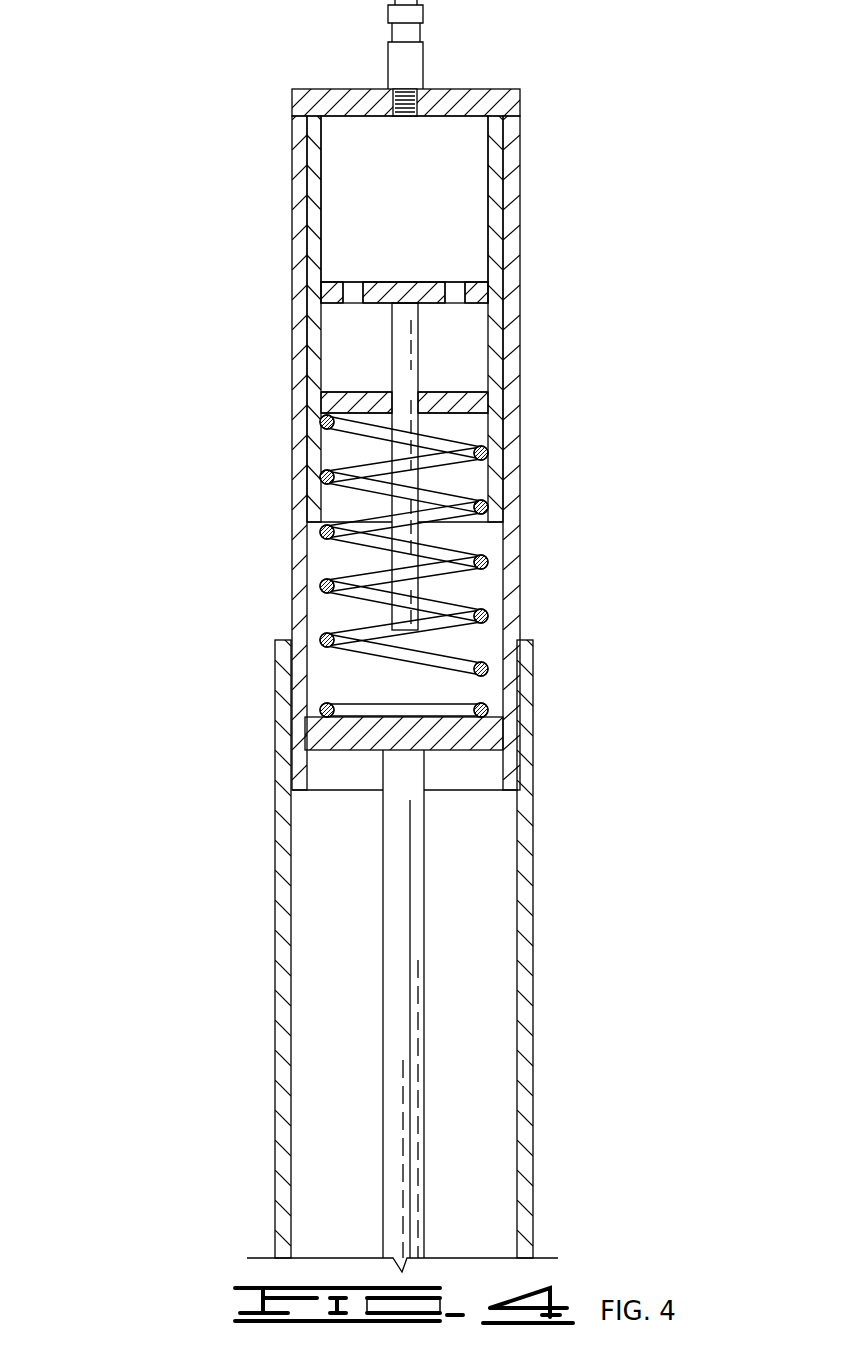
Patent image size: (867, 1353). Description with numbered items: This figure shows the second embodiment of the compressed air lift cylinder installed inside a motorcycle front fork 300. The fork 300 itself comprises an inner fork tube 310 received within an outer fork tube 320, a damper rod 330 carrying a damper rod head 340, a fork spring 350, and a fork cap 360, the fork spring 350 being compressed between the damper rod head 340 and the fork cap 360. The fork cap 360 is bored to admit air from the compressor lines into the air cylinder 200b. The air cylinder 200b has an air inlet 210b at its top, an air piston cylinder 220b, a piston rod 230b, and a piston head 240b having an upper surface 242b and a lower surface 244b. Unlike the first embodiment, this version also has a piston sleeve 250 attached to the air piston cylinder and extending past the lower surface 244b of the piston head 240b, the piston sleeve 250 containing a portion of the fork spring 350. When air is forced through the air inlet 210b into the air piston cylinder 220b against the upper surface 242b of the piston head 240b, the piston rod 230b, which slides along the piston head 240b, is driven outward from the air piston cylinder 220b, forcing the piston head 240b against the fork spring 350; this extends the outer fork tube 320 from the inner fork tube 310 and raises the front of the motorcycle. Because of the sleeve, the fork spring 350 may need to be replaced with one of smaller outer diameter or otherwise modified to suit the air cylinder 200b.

The air cylinder 200b is at (278, 135).
The air inlet 210b is at (383, 58).
The air piston cylinder 220b is at (332, 225).
The piston rod 230b is at (387, 333).
The piston head 240b is at (352, 392).
The upper surface 242b is at (467, 388).
The lower surface 244b is at (465, 415).
The piston sleeve 250 is at (330, 460).
The fork spring 350 is at (337, 637).
The fork cap 360 is at (520, 92).
The inner fork tube 310 is at (520, 203).
The outer fork tube 320 is at (533, 735).
The damper rod head 340 is at (457, 752).
The damper rod 330 is at (423, 1017).
The front fork 300 is at (262, 733).